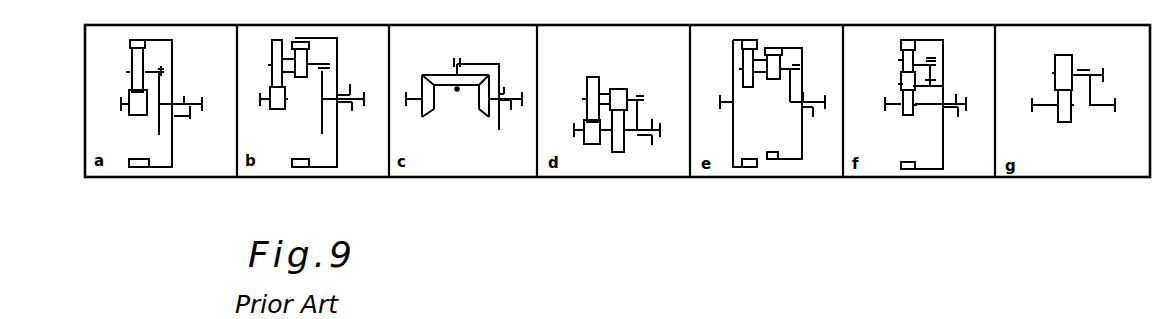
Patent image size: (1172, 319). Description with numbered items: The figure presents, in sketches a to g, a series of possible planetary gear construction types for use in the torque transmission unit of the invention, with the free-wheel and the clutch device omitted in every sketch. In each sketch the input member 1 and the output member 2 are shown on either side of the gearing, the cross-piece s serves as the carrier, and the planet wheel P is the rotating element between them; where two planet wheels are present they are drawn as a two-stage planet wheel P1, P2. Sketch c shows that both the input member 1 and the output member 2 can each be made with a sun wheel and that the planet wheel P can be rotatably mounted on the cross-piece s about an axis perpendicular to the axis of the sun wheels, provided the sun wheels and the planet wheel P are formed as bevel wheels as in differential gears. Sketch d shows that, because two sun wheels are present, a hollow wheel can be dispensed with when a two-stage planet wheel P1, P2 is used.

The input member 1 is at (586, 106).
The output member 2 is at (632, 98).
The cross-piece s is at (658, 92).
The planet wheel P is at (301, 87).
The first planet wheel P1 is at (584, 92).
The second planet wheel P2 is at (690, 96).